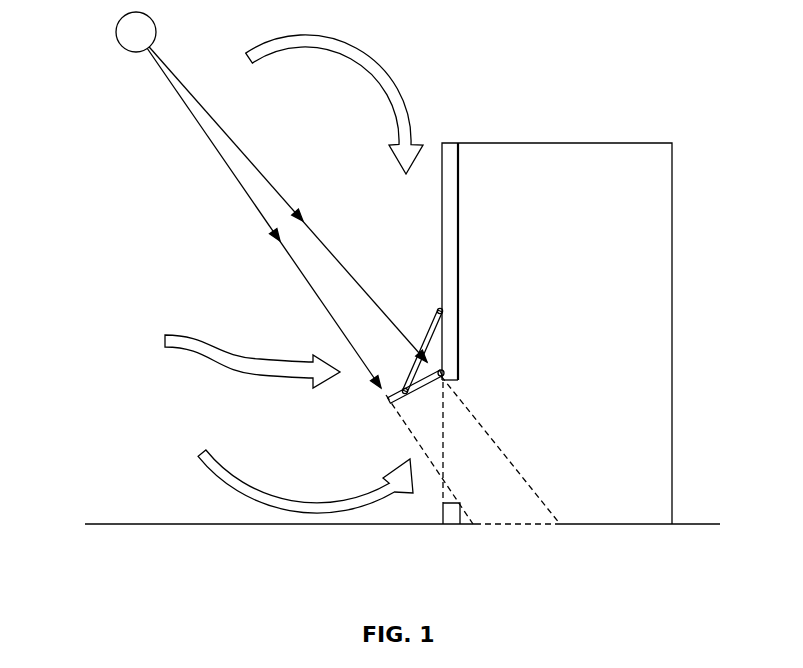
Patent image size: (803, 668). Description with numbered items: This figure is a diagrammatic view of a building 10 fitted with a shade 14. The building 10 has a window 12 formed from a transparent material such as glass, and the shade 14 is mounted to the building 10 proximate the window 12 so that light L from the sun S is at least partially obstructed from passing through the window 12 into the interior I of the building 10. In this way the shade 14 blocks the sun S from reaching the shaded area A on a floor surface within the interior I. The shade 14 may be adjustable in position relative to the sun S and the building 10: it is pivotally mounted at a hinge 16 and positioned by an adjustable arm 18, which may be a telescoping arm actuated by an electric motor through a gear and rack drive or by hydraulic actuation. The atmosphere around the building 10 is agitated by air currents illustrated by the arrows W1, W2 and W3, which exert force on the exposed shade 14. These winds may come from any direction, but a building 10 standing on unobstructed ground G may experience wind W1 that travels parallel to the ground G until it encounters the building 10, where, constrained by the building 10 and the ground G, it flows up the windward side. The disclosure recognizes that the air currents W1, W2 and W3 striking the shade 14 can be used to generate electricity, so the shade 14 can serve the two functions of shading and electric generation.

The building 10 is at (620, 143).
The window 12 is at (443, 432).
The shade 14 is at (441, 385).
The hinge 16 is at (428, 340).
The adjustable arm 18 is at (436, 320).
The sun S is at (136, 32).
The light L is at (217, 140).
The ground G is at (185, 524).
The shaded area A is at (522, 524).
The interior I is at (576, 324).
The wind W1 is at (202, 477).
The wind W2 is at (165, 340).
The wind W3 is at (315, 47).